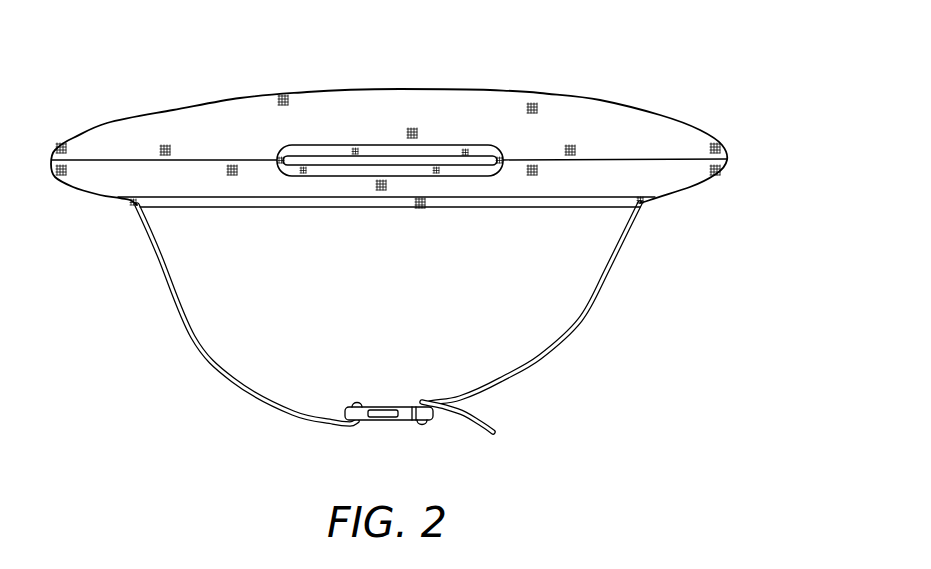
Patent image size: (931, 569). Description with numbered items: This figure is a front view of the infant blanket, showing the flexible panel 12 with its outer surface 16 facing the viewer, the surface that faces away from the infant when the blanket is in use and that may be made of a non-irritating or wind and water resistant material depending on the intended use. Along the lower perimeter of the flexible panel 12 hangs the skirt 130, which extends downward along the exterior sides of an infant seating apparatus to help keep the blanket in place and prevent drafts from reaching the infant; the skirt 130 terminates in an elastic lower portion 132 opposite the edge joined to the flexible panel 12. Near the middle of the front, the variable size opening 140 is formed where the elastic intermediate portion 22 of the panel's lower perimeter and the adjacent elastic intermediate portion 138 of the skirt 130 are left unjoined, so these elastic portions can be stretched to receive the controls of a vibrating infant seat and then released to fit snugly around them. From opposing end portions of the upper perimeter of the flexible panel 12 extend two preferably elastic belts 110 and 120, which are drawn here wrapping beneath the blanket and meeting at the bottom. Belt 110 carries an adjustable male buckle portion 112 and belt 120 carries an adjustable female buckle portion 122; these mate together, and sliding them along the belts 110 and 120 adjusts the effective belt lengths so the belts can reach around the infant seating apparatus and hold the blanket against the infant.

The flexible panel 12 is at (598, 98).
The outer surface 16 is at (658, 133).
The elastic intermediate portion of lower perimeter portion 22 is at (325, 147).
The variable size opening 140 is at (440, 160).
The skirt 130 is at (680, 173).
The elastic lower portion 132 is at (237, 203).
The elastic intermediate portion of skirt 138 is at (470, 170).
The belt 110 is at (577, 327).
The belt 120 is at (233, 382).
The adjustable female buckle portion 122 is at (380, 422).
The adjustable male buckle portion 112 is at (437, 425).